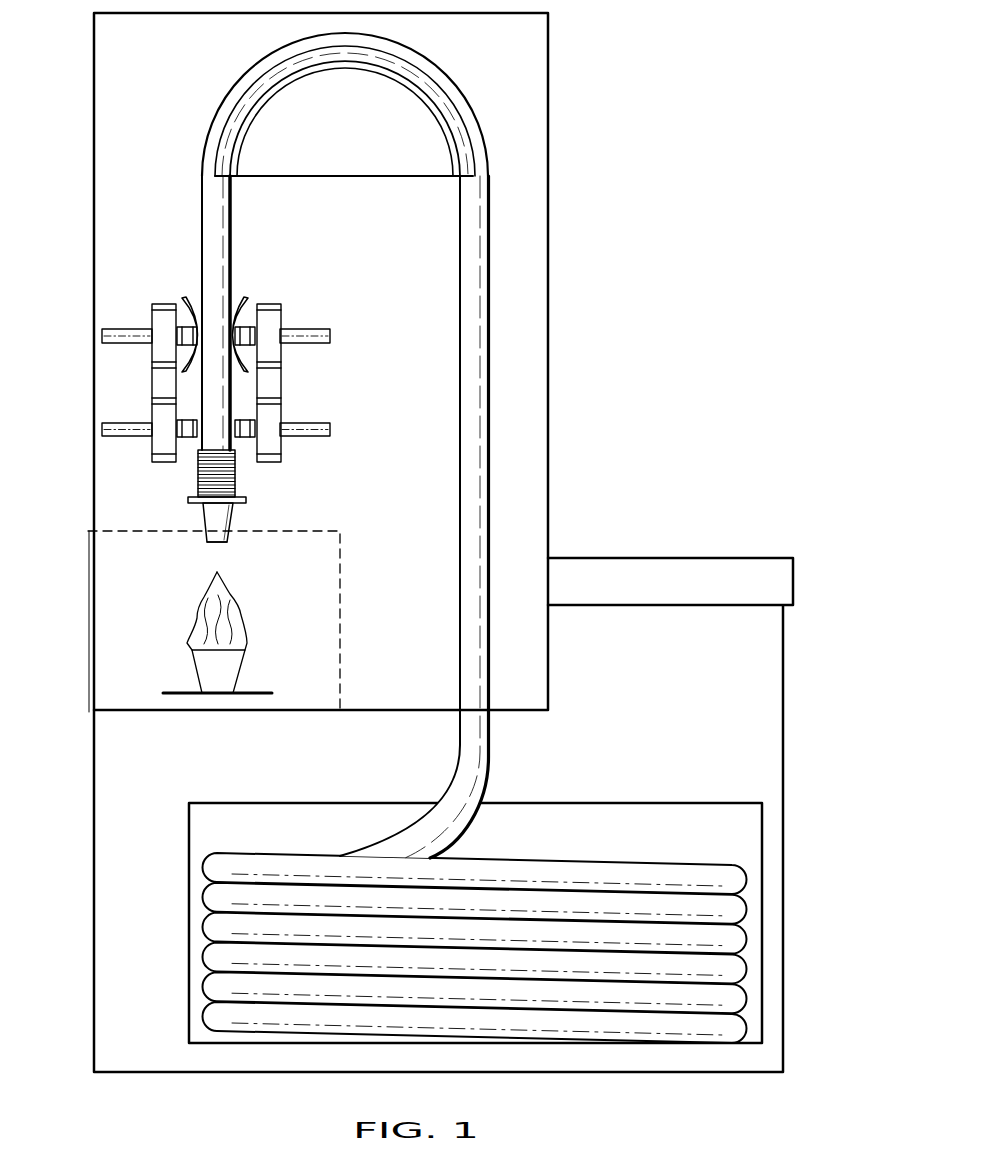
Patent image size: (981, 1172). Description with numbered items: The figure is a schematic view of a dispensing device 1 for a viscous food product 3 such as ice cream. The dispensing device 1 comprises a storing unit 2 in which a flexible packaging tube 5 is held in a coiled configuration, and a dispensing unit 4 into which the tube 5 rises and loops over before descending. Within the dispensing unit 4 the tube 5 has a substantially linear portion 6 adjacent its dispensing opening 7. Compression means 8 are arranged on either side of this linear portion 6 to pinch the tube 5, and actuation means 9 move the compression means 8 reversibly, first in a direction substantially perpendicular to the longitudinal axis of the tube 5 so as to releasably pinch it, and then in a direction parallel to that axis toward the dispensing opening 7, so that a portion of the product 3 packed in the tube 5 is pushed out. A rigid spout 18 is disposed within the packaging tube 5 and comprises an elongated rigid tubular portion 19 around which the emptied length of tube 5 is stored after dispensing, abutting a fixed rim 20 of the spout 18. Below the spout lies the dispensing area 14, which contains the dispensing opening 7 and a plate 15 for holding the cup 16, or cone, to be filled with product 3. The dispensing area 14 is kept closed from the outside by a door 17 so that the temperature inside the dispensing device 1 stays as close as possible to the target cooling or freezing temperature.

The dispensing device 1 is at (563, 413).
The storing unit 2 is at (743, 803).
The viscous product 3 is at (195, 632).
The dispensing unit 4 is at (548, 17).
The flexible packaging tube 5 is at (458, 638).
The linear portion 6 is at (232, 226).
The dispensing opening 7 is at (228, 546).
The compression means 8 is at (192, 333).
The actuation means 9 is at (102, 339).
The dispensing area 14 is at (117, 676).
The plate 15 is at (181, 697).
The cup 16 is at (229, 681).
The door 17 is at (88, 540).
The rigid spout 18 is at (208, 515).
The rigid tubular portion 19 is at (235, 480).
The fixed rim 20 is at (247, 500).